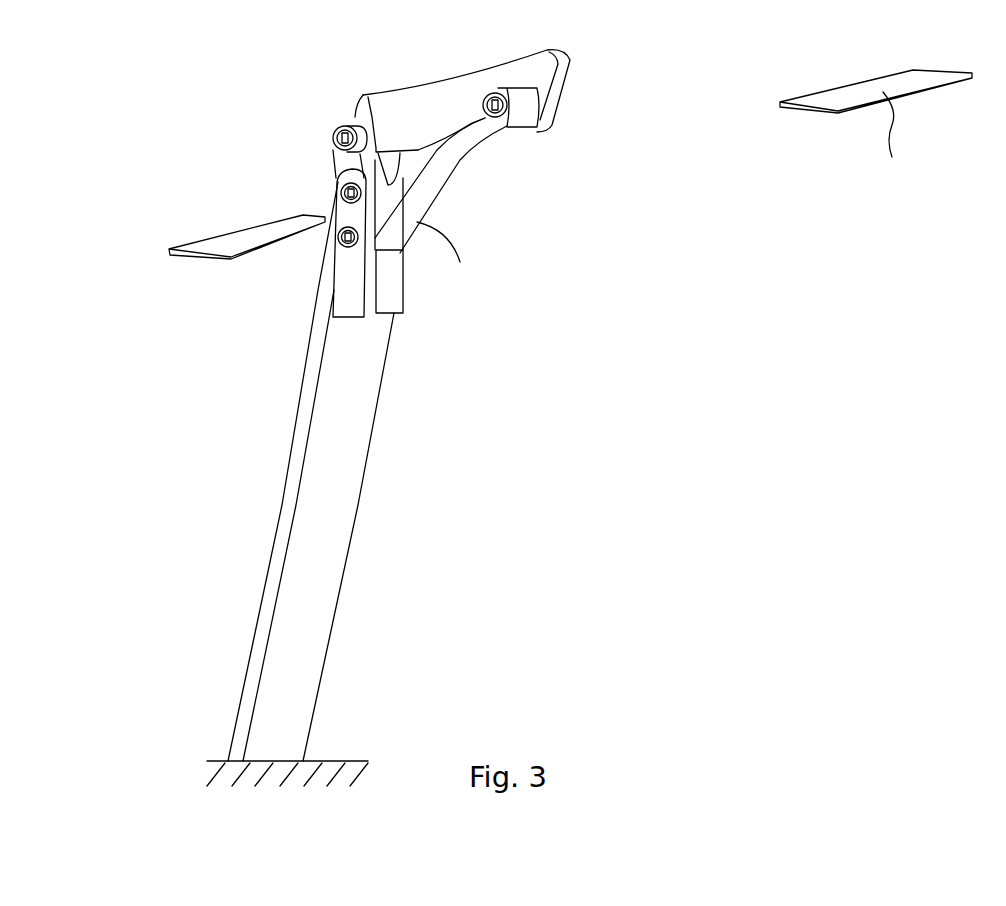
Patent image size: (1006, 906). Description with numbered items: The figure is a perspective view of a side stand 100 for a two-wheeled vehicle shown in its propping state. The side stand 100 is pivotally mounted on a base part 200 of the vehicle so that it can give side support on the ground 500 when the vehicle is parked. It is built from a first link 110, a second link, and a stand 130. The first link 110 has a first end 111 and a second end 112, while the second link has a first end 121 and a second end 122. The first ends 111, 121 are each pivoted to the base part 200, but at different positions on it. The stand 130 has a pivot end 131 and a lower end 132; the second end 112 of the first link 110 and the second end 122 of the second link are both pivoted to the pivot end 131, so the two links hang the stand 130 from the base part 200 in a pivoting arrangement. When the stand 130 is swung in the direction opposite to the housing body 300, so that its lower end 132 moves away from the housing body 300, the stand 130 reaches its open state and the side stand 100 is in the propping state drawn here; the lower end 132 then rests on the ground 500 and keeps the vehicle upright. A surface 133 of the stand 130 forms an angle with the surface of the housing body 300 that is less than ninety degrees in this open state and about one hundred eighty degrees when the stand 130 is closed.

The side stand 100 is at (196, 64).
The first link 110 is at (369, 168).
The first end of the first link 111 is at (347, 122).
The second end of the first link 112 is at (382, 185).
The first end of the second link 121 is at (520, 102).
The second end of the second link 122 is at (385, 242).
The stand 130 is at (306, 465).
The pivot end 131 is at (345, 298).
The lower end 132 is at (307, 597).
The surface of the stand 133 is at (262, 572).
The base part 200 is at (452, 63).
The housing body 300 is at (223, 250).
The ground 500 is at (331, 762).